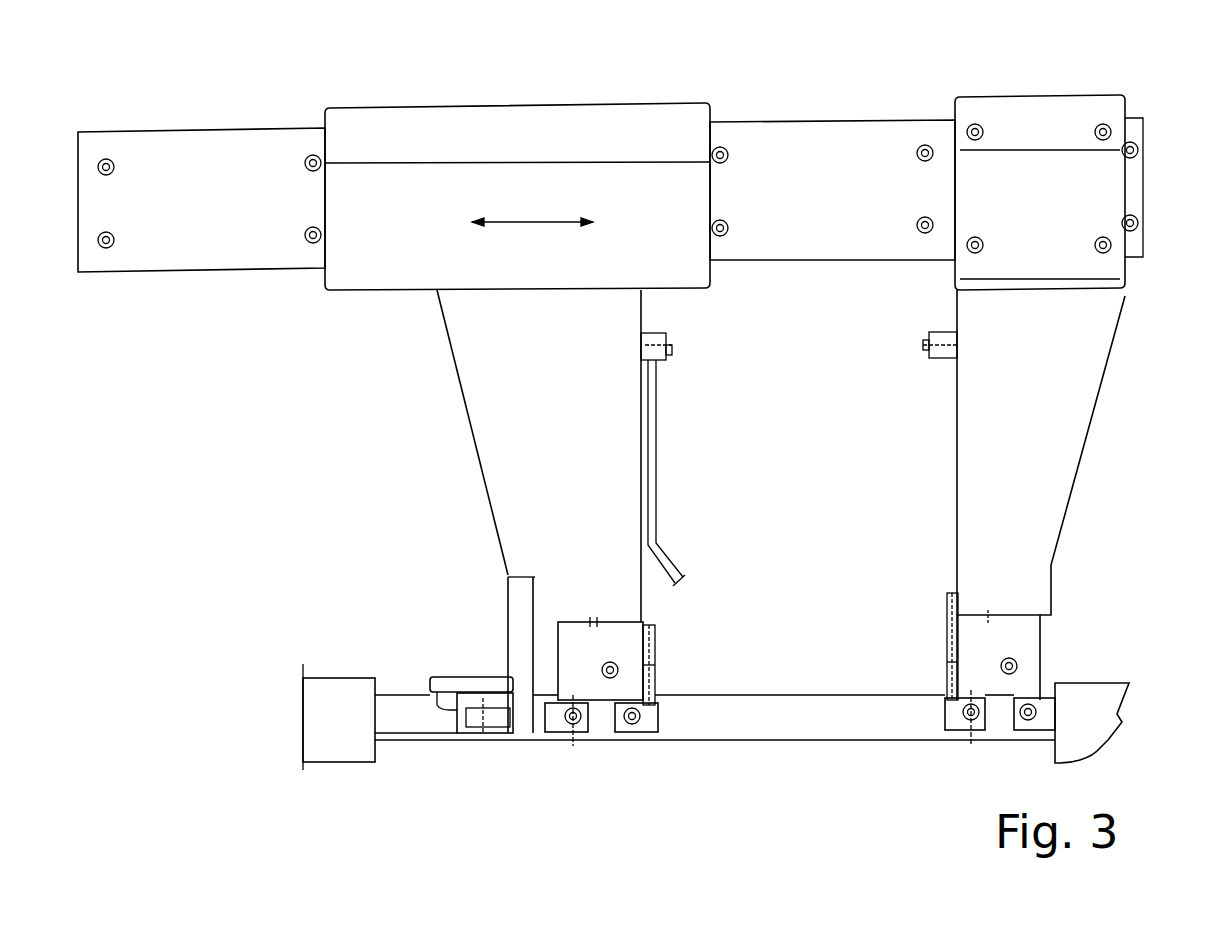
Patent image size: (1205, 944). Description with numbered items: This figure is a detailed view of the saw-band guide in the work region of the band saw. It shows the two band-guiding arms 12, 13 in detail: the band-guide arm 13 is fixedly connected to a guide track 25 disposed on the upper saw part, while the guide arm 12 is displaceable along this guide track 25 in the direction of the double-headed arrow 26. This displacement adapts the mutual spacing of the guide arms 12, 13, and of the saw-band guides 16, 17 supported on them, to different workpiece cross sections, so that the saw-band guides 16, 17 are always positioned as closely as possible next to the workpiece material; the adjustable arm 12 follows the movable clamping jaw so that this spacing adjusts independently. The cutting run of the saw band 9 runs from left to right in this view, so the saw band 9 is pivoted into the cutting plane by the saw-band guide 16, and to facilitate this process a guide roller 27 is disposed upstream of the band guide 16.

The saw band 9 is at (778, 713).
The band-guiding arm 12 is at (528, 421).
The band-guide arm 13 is at (1036, 443).
The saw-band guide 16 is at (597, 717).
The saw-band guide 17 is at (1000, 712).
The guide track 25 is at (810, 166).
The double-headed arrow 26 is at (527, 222).
The guide roller 27 is at (502, 717).